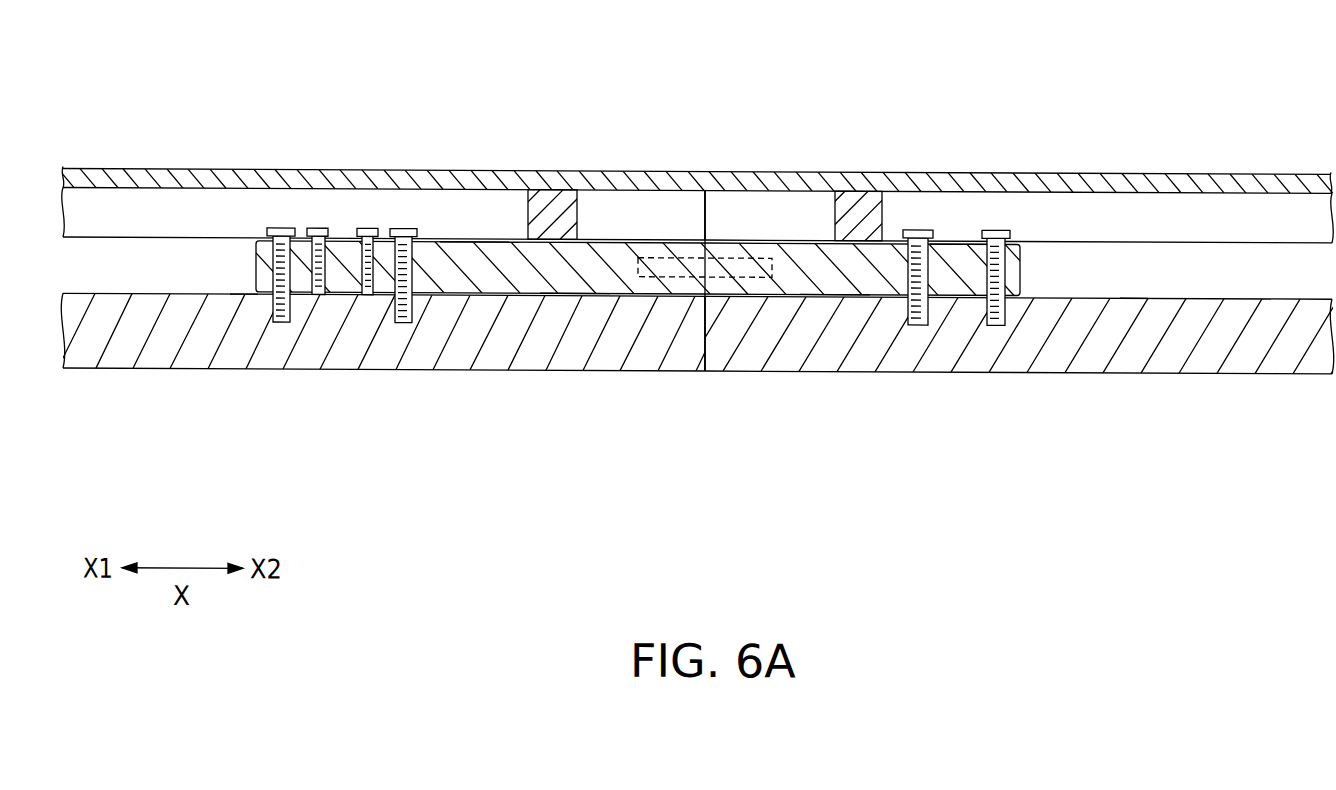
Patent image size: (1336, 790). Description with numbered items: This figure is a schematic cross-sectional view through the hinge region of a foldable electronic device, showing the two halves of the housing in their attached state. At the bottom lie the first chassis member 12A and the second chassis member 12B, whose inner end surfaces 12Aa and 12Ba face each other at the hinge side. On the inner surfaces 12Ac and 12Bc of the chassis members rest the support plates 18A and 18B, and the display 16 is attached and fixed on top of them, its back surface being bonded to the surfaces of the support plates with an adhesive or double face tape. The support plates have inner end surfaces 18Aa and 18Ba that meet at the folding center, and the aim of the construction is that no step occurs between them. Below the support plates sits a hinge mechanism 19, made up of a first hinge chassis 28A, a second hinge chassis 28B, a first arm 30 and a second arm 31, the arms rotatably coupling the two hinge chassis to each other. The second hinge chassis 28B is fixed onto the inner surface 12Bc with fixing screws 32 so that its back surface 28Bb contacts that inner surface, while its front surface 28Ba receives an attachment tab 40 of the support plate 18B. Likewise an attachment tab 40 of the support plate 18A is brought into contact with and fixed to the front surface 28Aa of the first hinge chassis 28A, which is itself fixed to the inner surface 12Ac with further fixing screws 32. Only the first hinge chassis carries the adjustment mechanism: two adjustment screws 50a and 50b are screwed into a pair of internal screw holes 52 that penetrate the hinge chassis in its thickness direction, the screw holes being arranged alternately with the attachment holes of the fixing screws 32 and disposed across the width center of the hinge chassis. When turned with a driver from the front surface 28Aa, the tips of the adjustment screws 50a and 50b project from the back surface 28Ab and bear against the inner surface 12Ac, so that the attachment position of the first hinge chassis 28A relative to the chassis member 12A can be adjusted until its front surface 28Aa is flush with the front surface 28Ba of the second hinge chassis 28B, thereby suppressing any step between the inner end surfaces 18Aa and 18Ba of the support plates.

The display 16 is at (172, 162).
The support plate 18A is at (103, 207).
The support plate 18B is at (1285, 207).
The inner end surface of support plate 18Aa is at (710, 220).
The inner end surface of support plate 18Ba is at (703, 210).
The first chassis member 12A is at (116, 372).
The second chassis member 12B is at (1285, 369).
The inner end surface of chassis member 12Aa is at (707, 322).
The inner end surface of chassis member 12Ba is at (703, 323).
The inner surface of chassis member 12Ac is at (244, 292).
The inner surface of chassis member 12Bc is at (1133, 292).
The first hinge chassis 28A is at (492, 272).
The second hinge chassis 28B is at (885, 273).
The front surface of first hinge chassis 28Aa is at (480, 239).
The back surface of first hinge chassis 28Ab is at (572, 291).
The front surface of second hinge chassis 28Ba is at (962, 239).
The back surface of second hinge chassis 28Bb is at (835, 291).
The attachment tab 40 is at (550, 197).
The fixing screw 32 is at (278, 321).
The adjustment screw 50a is at (318, 294).
The adjustment screw 50b is at (367, 294).
The internal screw hole 52 is at (337, 272).
The first arm 30 is at (758, 175).
The second arm 31 is at (772, 254).
The hinge mechanism 19 is at (1040, 268).